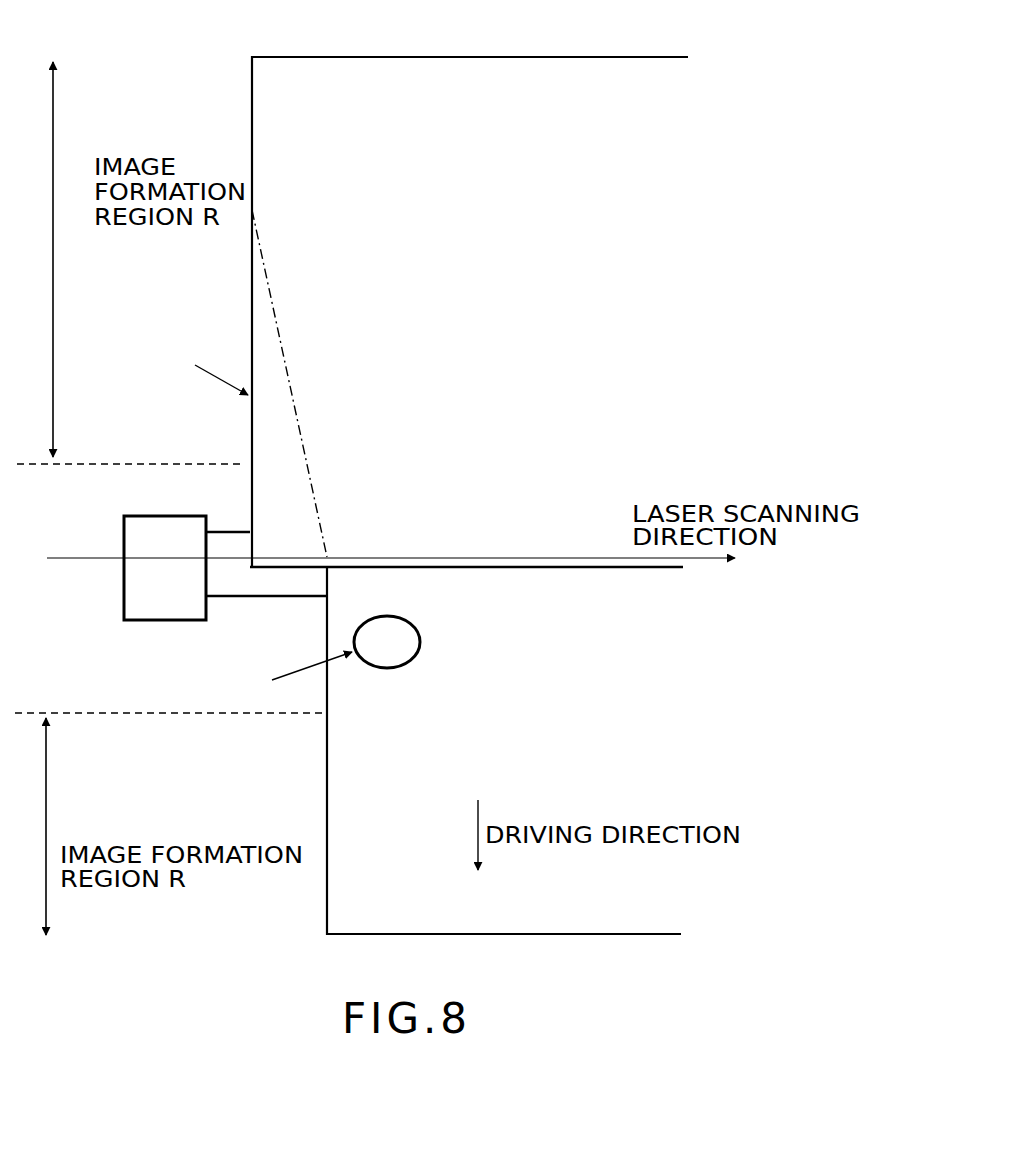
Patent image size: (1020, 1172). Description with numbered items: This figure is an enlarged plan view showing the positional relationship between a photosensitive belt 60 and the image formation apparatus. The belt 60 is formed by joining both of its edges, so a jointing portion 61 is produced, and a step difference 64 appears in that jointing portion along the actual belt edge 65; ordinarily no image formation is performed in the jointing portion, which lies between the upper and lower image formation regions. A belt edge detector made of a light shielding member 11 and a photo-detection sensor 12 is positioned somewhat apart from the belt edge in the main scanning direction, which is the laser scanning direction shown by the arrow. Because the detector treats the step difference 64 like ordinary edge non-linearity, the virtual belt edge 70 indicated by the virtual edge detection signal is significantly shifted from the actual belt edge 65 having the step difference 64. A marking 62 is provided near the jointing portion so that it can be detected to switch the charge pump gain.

The light shielding member 11 is at (144, 522).
The photo-detection sensor 12 is at (228, 544).
The photosensitive belt 60 is at (503, 70).
The jointing portion 61 is at (575, 569).
The marking 62 is at (293, 676).
The step difference 64 is at (291, 568).
The belt edge portion 65 is at (210, 377).
The virtual belt edge 70 is at (294, 395).